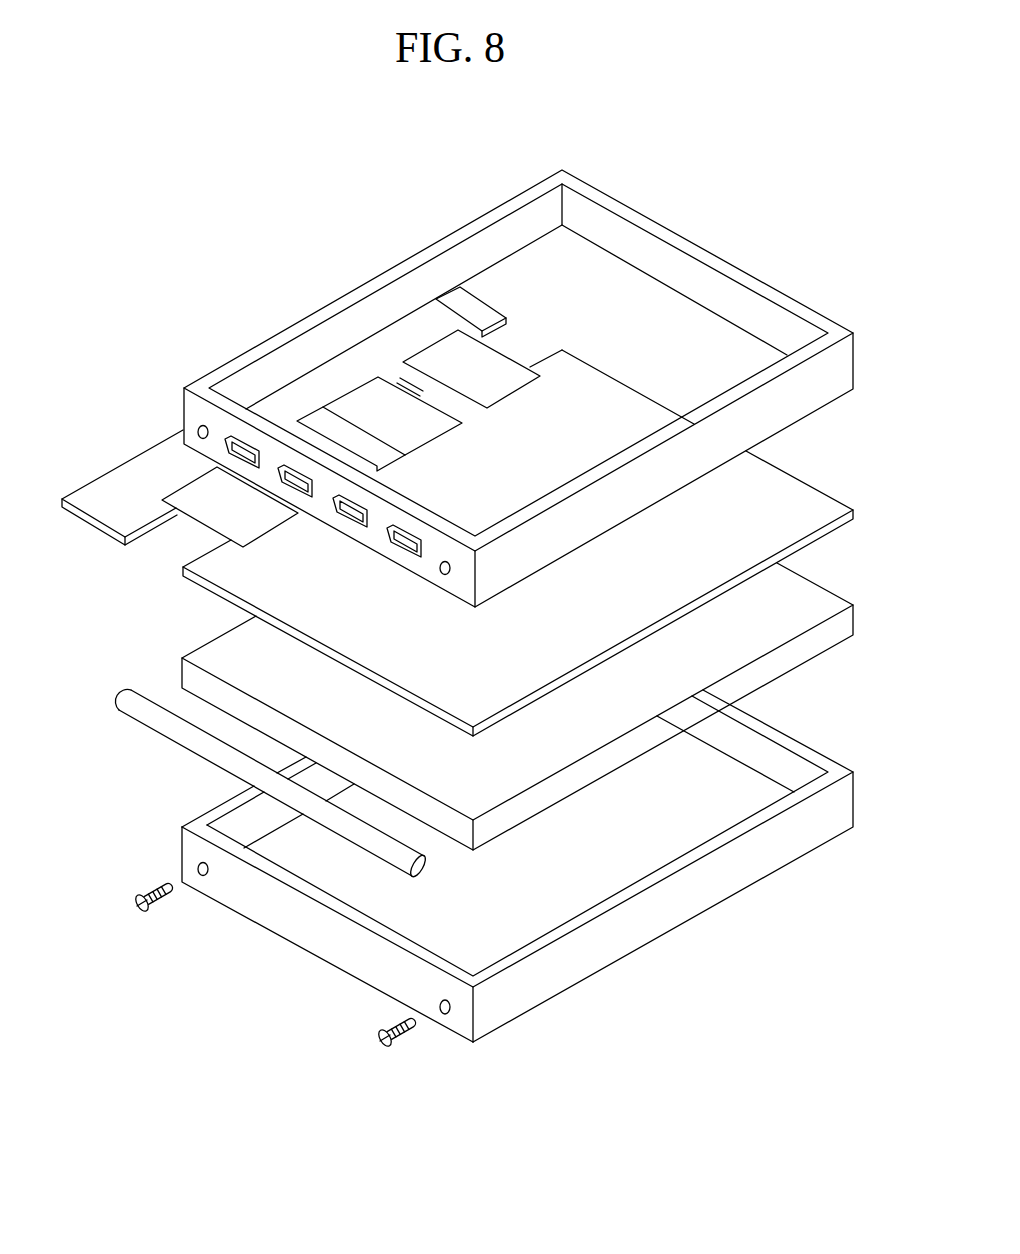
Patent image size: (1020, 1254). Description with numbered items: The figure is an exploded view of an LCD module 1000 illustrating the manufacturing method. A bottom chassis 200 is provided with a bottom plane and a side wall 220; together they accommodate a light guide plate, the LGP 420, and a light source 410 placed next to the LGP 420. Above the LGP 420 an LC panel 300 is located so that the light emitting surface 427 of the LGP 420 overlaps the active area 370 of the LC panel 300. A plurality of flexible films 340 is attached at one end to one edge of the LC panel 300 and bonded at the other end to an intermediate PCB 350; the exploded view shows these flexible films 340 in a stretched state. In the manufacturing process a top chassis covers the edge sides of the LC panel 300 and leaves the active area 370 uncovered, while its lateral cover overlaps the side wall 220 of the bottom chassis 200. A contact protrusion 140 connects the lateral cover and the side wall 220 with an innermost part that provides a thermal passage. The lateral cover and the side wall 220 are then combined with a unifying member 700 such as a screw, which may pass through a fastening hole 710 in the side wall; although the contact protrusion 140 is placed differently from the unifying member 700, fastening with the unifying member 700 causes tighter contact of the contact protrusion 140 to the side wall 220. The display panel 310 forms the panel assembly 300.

The display apparatus 1000 is at (810, 132).
The contact protrusion 140 is at (183, 417).
The fastening hole 710 is at (203, 432).
The intermediate PCB 350 is at (126, 511).
The flexible films 340 is at (207, 508).
The active area 370 is at (500, 470).
The LC panel 300 is at (622, 552).
The display panel 310 is at (378, 665).
The light emitting surface 427 is at (243, 650).
The LGP 420 is at (198, 683).
The light source 410 is at (127, 705).
The side wall 220 is at (297, 918).
The bottom chassis 200 is at (713, 884).
The unifying member 700 is at (378, 1046).